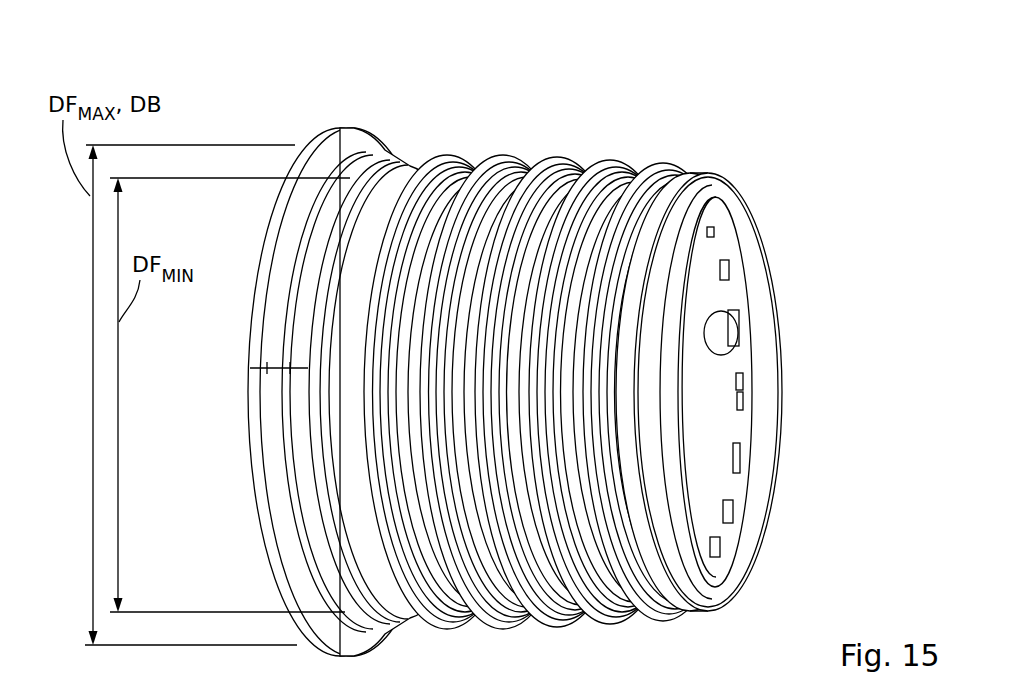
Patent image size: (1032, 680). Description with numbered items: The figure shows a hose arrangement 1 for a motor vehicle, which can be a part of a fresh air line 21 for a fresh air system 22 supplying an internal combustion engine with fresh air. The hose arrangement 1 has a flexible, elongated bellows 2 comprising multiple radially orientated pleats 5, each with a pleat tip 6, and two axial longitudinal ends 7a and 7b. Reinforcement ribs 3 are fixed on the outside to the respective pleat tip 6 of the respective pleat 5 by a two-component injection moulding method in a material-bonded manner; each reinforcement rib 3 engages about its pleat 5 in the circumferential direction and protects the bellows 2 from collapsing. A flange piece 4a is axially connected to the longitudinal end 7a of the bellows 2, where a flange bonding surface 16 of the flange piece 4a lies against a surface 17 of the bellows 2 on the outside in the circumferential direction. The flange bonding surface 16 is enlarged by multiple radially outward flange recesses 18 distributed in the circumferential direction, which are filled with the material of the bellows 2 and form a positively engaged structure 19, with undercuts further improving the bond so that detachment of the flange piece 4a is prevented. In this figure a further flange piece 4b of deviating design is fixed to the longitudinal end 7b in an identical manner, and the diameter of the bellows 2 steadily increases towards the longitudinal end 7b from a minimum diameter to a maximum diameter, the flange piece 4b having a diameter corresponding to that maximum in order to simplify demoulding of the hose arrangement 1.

The hose arrangement 1 is at (786, 143).
The bellows 2 is at (633, 132).
The reinforcement ribs 3 is at (503, 156).
The flange piece 4a is at (760, 226).
The further flange piece 4b is at (332, 127).
The pleats 5 is at (465, 158).
The pleat tip 6 is at (463, 160).
The longitudinal end 7a is at (805, 383).
The longitudinal end 7b is at (236, 392).
The flange bonding surface 16 is at (712, 347).
The surface 17 is at (690, 300).
The flange recesses 18 is at (743, 403).
The positively engaged structure 19 is at (740, 457).
The fresh air line 21 is at (271, 81).
The fresh air system 22 is at (245, 68).